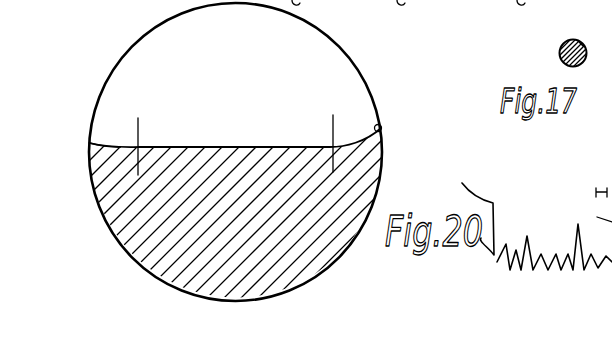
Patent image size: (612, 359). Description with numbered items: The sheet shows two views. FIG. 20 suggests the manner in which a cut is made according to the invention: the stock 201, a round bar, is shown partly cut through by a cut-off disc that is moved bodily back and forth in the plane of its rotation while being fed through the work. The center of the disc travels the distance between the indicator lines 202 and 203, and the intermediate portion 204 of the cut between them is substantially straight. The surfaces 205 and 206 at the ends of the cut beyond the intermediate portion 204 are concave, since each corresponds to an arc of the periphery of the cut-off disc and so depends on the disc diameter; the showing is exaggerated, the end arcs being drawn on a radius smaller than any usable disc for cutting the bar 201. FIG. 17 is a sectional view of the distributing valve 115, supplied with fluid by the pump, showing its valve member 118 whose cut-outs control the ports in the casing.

In FIG. 20, the stock 201 is at (368, 87).
In FIG. 20, the indicator line 202 is at (333, 128).
In FIG. 20, the indicator line 203 is at (140, 141).
In FIG. 20, the intermediate portion of the cut 204 is at (244, 146).
In FIG. 20, the surface of the cut 205 is at (91, 141).
In FIG. 20, the surface of the cut 206 is at (380, 125).
In FIG. 17, the valve member 118 is at (560, 50).
In FIG. 17, the distributing valve 115 is at (585, 45).